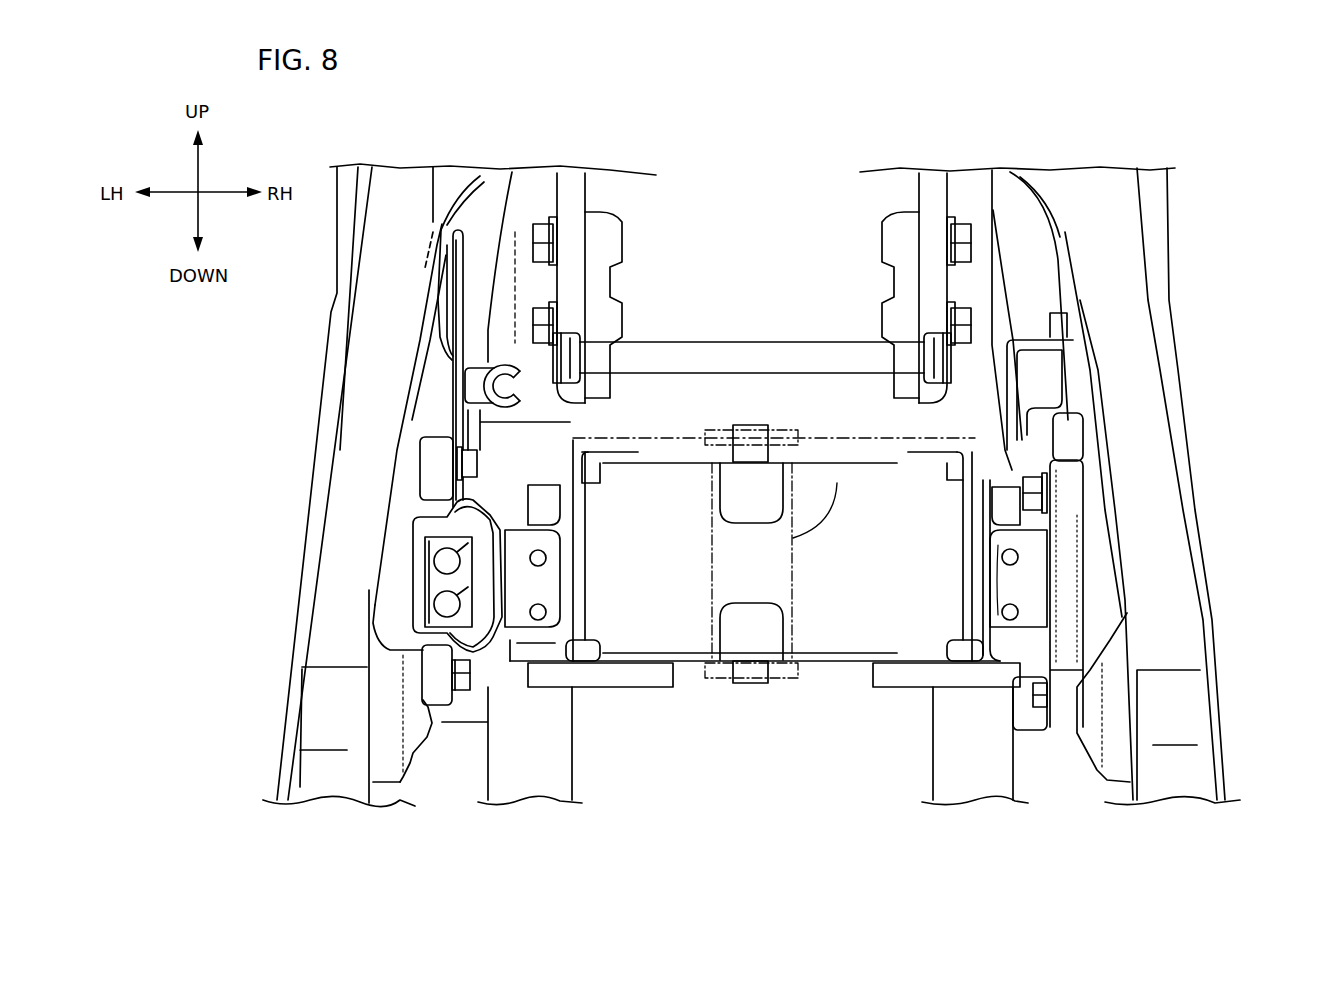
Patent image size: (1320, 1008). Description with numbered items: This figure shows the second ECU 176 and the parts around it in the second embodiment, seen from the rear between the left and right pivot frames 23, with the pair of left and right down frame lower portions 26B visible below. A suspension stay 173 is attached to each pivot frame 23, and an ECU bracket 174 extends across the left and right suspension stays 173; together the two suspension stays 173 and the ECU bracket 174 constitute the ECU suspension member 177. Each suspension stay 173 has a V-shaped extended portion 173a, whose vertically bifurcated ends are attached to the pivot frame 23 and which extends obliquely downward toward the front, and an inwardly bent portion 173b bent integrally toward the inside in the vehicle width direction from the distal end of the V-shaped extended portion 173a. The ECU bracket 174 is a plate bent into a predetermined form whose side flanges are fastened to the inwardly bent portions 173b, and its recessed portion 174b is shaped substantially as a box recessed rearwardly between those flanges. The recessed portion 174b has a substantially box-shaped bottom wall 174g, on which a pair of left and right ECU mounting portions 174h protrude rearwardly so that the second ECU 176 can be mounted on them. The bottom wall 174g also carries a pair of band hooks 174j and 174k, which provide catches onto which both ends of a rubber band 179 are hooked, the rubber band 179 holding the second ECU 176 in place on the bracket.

The pivot frame 23 is at (340, 489).
The down frame lower portion 26B is at (538, 788).
The suspension stay 173 is at (440, 720).
The V-shaped extended portion 173a is at (473, 700).
The inwardly bent portion 173b is at (513, 557).
The ECU bracket 174 is at (823, 663).
The recessed portion 174b is at (648, 627).
The bottom wall 174g is at (682, 630).
The ECU mounting portion 174h is at (614, 688).
The band hook 174j is at (748, 428).
The band hook 174k is at (753, 683).
The second ECU 176 is at (667, 440).
The ECU suspension member 177 is at (615, 427).
The rubber band 179 is at (837, 483).